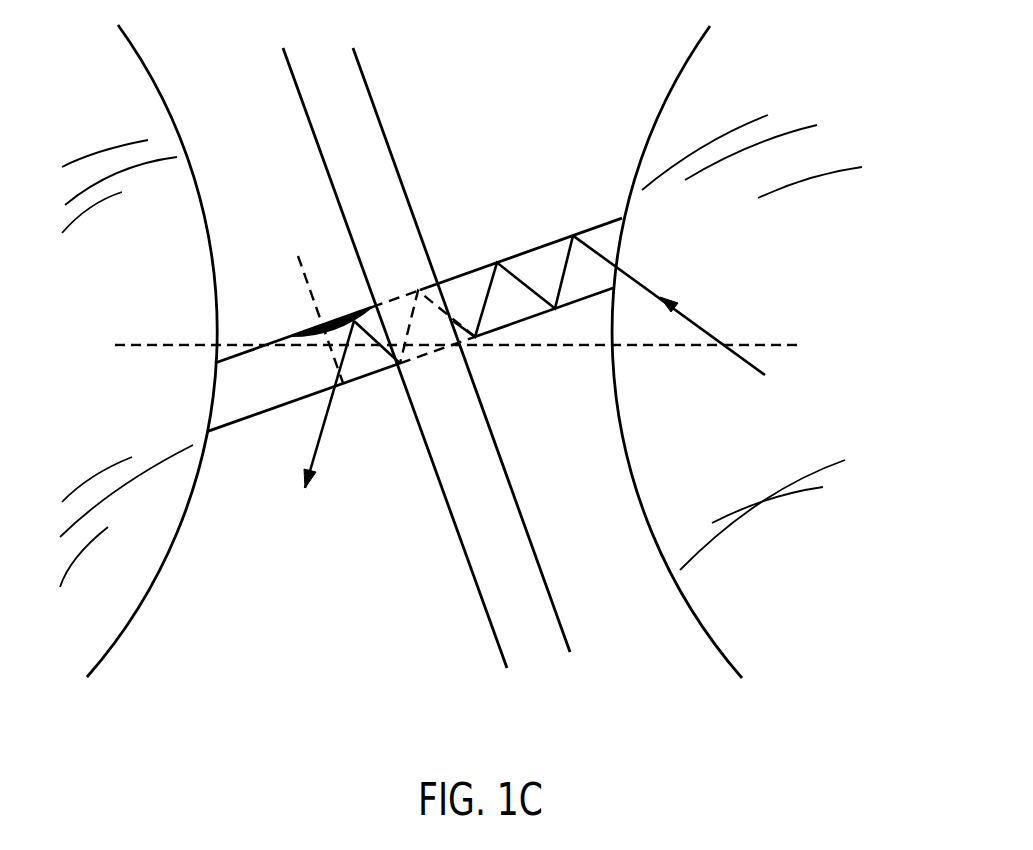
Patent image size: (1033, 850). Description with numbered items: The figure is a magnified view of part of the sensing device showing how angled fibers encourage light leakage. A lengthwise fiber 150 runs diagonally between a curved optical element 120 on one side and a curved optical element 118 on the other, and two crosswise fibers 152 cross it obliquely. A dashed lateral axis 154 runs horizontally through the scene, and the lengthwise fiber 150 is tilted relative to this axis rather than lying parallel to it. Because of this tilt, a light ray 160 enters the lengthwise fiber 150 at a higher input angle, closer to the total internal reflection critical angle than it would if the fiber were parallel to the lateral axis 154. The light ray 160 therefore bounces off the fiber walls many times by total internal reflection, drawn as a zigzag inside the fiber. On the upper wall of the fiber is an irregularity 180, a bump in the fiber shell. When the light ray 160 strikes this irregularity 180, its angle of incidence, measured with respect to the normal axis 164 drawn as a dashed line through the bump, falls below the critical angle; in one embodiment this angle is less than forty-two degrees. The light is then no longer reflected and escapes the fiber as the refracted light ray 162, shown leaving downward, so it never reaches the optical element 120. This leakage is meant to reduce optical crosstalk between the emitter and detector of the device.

The optical element 118 is at (685, 597).
The optical element 120 is at (145, 597).
The lengthwise fiber 150 is at (528, 251).
The crosswise fiber 152 is at (444, 60).
The lateral axis 154 is at (134, 343).
The light ray 160 is at (738, 356).
The refracted light ray 162 is at (322, 434).
The normal axis 164 is at (310, 298).
The irregularity 180 is at (337, 318).